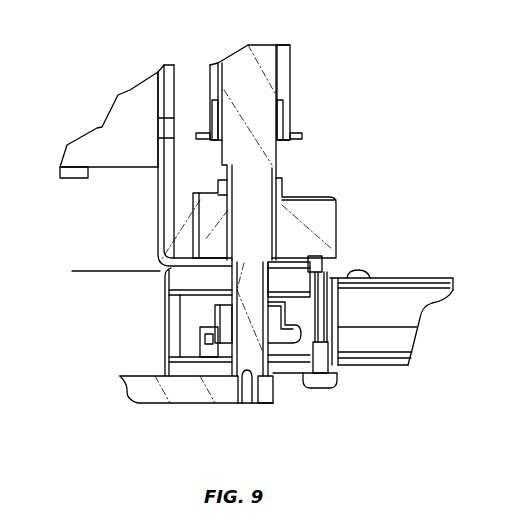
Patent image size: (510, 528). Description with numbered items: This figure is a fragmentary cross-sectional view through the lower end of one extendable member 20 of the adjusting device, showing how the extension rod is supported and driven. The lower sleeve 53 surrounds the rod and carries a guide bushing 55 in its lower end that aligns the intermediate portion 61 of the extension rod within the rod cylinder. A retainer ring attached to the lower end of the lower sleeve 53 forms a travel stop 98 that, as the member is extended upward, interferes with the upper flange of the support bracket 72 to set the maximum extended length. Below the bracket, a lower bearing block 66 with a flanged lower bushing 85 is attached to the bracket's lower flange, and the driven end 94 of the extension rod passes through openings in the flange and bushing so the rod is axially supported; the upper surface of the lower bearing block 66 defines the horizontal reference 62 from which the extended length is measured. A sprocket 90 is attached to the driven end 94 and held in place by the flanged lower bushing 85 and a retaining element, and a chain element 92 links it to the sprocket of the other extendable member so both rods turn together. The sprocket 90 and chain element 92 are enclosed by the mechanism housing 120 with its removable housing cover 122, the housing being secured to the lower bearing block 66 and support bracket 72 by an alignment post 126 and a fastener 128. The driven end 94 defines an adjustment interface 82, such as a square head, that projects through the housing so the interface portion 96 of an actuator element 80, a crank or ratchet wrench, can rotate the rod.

The extendable member 20 is at (356, 80).
The lower sleeve 53 is at (337, 200).
The guide bushing 55 is at (288, 110).
The intermediate portion 61 is at (283, 70).
The horizontal reference 62 is at (112, 272).
The lower bearing block 66 is at (166, 275).
The support bracket 72 is at (162, 200).
The actuator element 80 is at (161, 404).
The adjustment interface 82 is at (269, 392).
The flanged lower bushing 85 is at (268, 281).
The sprocket 90 is at (214, 318).
The chain element 92 is at (200, 350).
The driven end 94 is at (272, 368).
The interface portion 96 is at (247, 388).
The travel stop 98 is at (300, 137).
The mechanism housing 120 is at (404, 366).
The housing cover 122 is at (412, 278).
The alignment post 126 is at (338, 306).
The fastener 128 is at (330, 386).